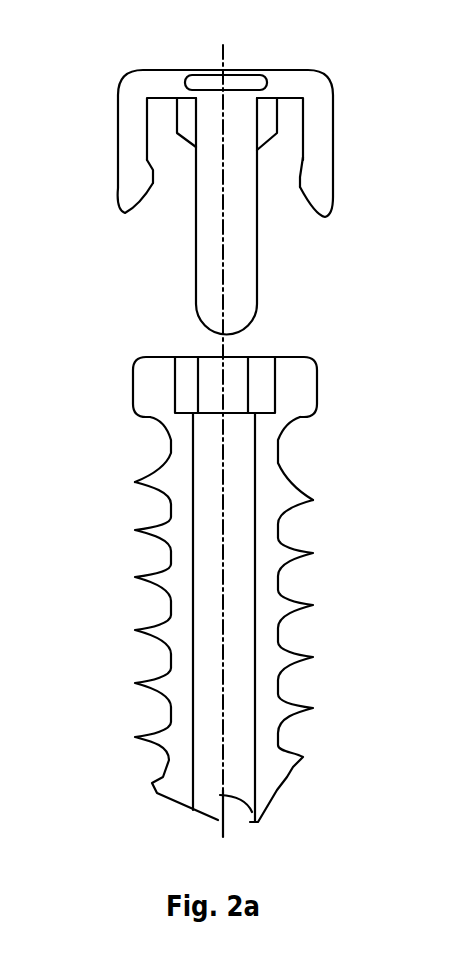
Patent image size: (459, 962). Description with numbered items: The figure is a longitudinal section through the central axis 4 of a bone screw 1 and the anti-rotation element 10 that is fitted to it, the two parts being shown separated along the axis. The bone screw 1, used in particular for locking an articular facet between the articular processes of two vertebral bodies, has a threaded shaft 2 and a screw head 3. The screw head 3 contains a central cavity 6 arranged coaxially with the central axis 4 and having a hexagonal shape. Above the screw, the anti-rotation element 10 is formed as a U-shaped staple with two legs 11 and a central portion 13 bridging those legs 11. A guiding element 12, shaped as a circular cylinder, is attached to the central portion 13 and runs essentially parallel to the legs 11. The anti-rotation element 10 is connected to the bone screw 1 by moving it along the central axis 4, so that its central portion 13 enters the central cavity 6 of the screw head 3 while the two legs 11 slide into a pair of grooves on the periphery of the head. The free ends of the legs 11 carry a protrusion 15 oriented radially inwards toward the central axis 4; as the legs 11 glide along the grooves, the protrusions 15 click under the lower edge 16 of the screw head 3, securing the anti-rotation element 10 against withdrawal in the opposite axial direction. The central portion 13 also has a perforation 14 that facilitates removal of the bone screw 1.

The bone screw 1 is at (235, 589).
The threaded shaft 2 is at (163, 577).
The screw head 3 is at (155, 383).
The central axis 4 is at (222, 128).
The central cavity 6 is at (232, 392).
The anti-rotation element 10 is at (229, 173).
The legs 11 is at (130, 183).
The guiding element 12 is at (237, 287).
The central portion 13 is at (325, 83).
The perforation 14 is at (258, 72).
The protrusion 15 is at (125, 213).
The lower edge 16 is at (310, 418).